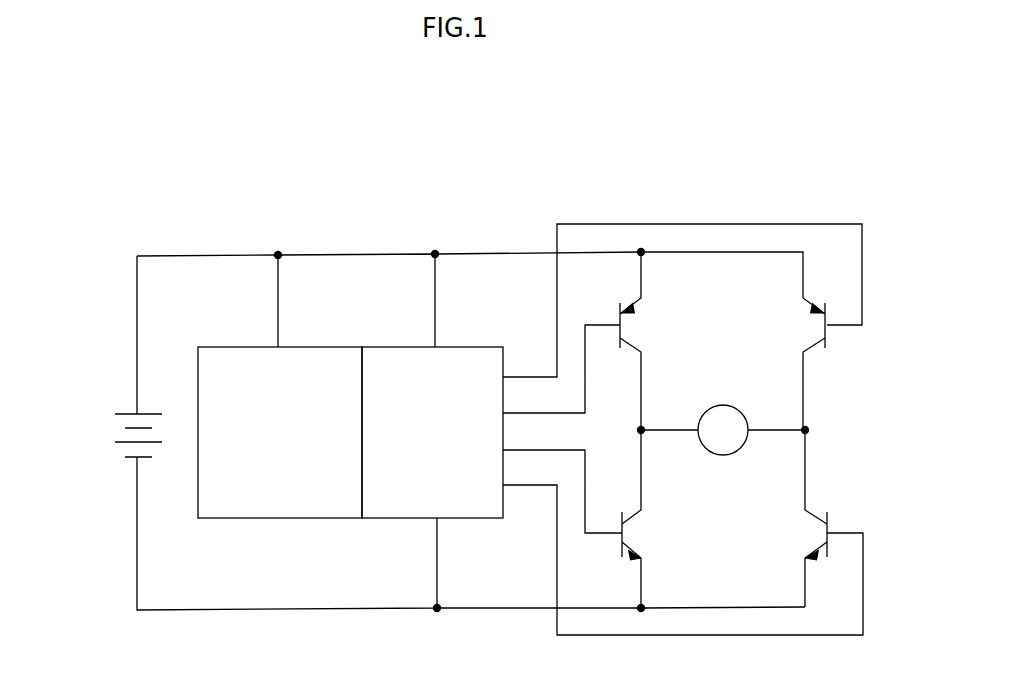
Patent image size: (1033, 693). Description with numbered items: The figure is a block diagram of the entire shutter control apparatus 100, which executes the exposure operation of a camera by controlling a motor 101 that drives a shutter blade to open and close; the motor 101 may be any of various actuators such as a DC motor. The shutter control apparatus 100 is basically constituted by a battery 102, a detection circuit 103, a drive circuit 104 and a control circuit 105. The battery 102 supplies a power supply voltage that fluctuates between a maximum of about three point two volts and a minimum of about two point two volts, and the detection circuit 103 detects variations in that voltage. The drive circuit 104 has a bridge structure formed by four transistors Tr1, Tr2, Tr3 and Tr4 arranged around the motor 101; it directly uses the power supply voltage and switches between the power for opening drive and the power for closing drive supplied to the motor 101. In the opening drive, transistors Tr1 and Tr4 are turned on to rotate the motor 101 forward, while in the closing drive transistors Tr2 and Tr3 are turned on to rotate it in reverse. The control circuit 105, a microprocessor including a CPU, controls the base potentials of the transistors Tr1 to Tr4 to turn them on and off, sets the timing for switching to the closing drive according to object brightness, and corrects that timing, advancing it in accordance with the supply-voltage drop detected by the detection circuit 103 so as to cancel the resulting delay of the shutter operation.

The shutter control apparatus 100 is at (431, 196).
The motor 101 is at (738, 408).
The battery 102 is at (112, 431).
The detection circuit 103 is at (283, 520).
The drive circuit 104 is at (723, 386).
The control circuit 105 is at (472, 520).
The transistor Tr1 is at (649, 341).
The transistor Tr2 is at (795, 364).
The transistor Tr3 is at (651, 519).
The transistor Tr4 is at (797, 518).